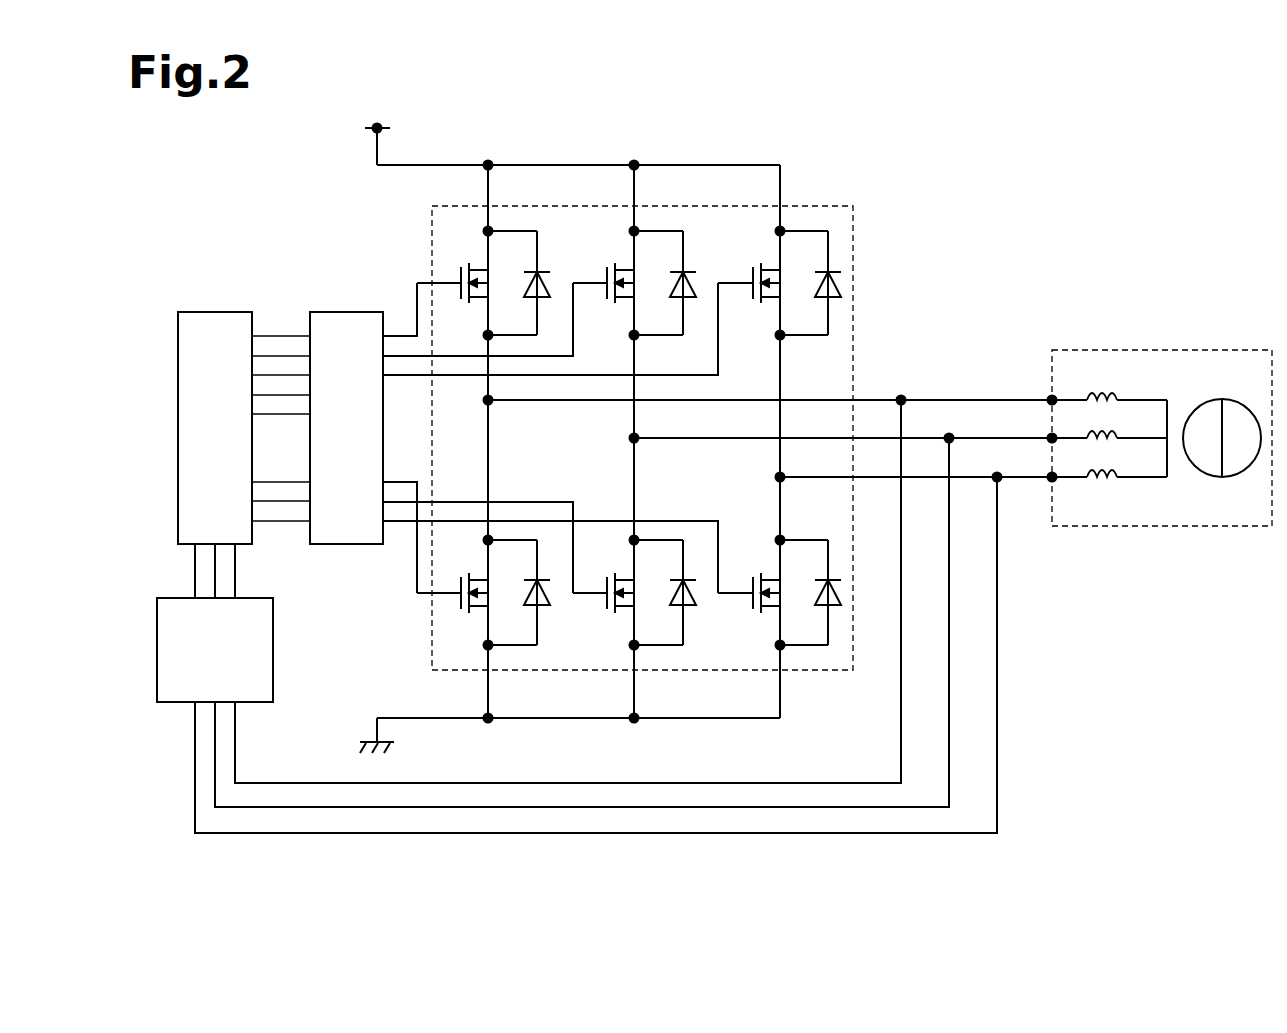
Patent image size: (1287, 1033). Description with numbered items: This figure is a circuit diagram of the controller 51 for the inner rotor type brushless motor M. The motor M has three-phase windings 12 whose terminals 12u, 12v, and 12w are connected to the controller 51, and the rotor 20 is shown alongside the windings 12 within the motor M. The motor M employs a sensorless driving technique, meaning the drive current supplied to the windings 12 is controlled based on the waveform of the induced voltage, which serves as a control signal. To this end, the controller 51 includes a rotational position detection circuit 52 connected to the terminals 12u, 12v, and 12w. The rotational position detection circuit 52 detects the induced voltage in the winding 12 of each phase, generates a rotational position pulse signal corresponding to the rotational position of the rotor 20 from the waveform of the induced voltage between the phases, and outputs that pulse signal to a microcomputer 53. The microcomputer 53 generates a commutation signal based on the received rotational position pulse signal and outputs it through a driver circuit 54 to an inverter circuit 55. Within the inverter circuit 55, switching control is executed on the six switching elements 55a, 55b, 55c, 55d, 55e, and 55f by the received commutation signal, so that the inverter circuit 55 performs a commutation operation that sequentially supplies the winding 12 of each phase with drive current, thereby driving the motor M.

The controller 51 is at (866, 160).
The inverter circuit 55 is at (853, 225).
The switching element 55a is at (465, 268).
The switching element 55b is at (463, 612).
The switching element 55c is at (611, 268).
The switching element 55d is at (609, 612).
The switching element 55e is at (757, 268).
The switching element 55f is at (755, 612).
The microcomputer 53 is at (215, 312).
The driver circuit 54 is at (345, 312).
The rotational position detection circuit 52 is at (274, 650).
The terminal 12u is at (1049, 400).
The terminal 12v is at (1049, 439).
The terminal 12w is at (1052, 478).
The windings 12 is at (1118, 390).
The rotor 20 is at (1230, 399).
The brushless motor M is at (1160, 350).